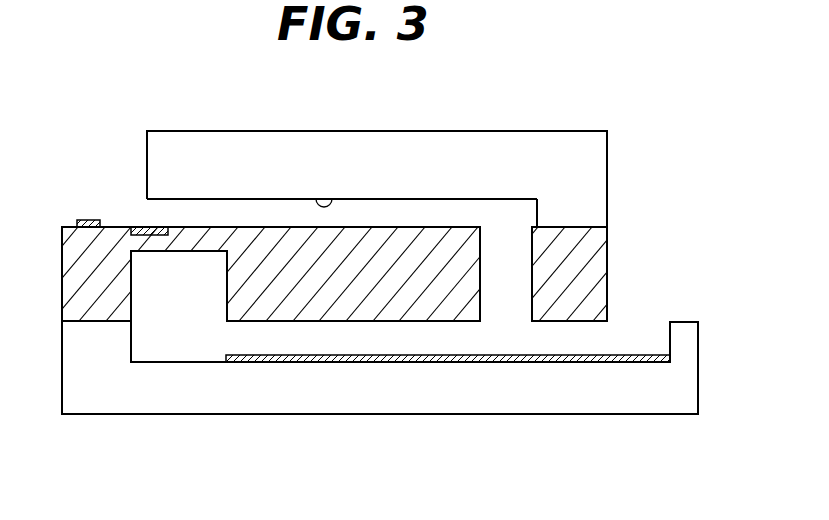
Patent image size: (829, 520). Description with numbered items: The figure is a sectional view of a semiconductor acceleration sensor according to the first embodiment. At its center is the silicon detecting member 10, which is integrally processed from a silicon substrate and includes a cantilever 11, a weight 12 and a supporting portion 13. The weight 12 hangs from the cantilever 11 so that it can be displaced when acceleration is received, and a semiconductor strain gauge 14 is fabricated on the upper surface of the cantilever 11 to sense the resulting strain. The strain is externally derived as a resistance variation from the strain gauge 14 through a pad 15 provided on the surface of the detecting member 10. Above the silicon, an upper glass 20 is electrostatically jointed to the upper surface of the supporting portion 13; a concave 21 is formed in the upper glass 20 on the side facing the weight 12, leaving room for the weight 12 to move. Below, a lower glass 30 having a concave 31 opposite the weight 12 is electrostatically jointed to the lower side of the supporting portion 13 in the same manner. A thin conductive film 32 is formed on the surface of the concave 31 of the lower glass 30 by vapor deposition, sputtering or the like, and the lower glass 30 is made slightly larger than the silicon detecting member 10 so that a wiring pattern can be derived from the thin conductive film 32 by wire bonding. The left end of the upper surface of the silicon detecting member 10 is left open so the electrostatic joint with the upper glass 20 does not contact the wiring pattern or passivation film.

The silicon detecting member 10 is at (685, 224).
The cantilever 11 is at (199, 233).
The weight 12 is at (432, 248).
The supporting portion 13 is at (598, 247).
The semiconductor strain gauge 14 is at (134, 227).
The pad 15 is at (80, 220).
The upper glass 20 is at (553, 162).
The concave 21 is at (333, 188).
The lower glass 30 is at (630, 405).
The concave 31 is at (160, 360).
The thin conductive film 32 is at (442, 362).